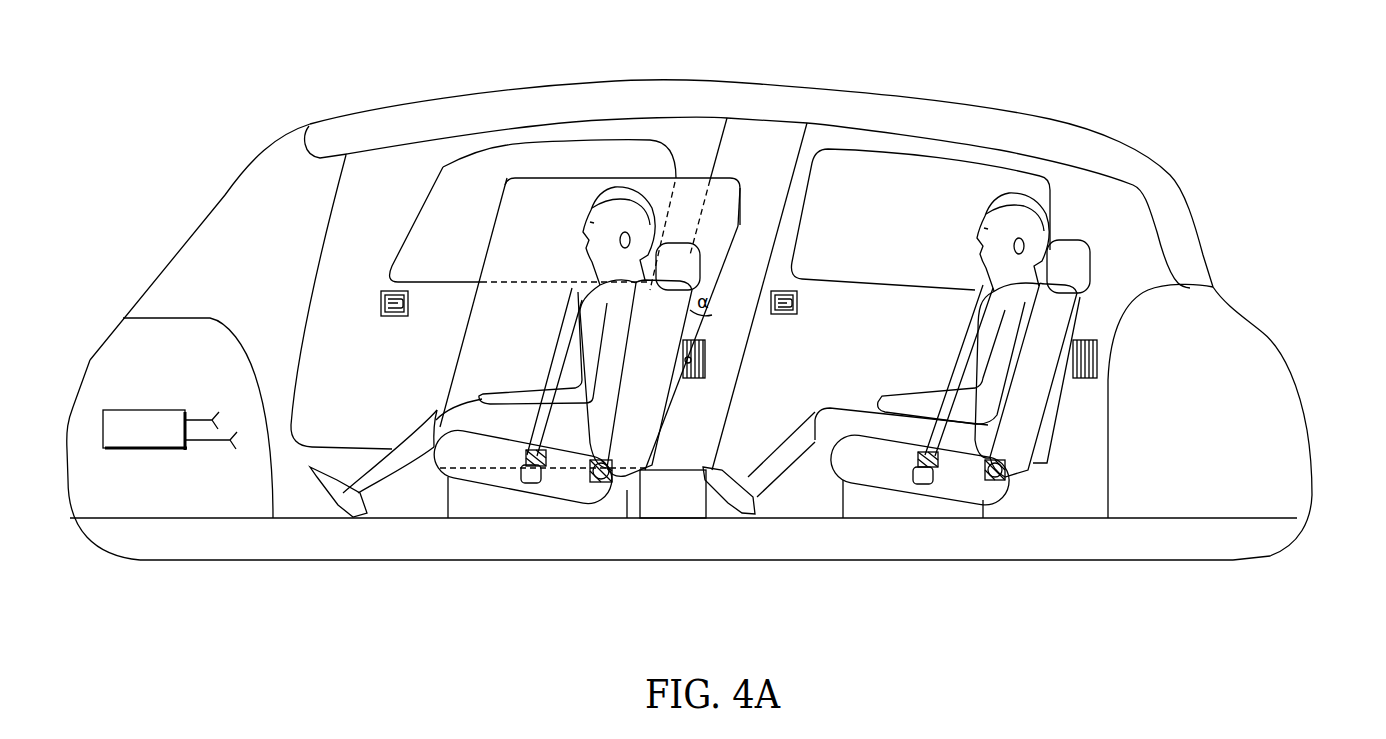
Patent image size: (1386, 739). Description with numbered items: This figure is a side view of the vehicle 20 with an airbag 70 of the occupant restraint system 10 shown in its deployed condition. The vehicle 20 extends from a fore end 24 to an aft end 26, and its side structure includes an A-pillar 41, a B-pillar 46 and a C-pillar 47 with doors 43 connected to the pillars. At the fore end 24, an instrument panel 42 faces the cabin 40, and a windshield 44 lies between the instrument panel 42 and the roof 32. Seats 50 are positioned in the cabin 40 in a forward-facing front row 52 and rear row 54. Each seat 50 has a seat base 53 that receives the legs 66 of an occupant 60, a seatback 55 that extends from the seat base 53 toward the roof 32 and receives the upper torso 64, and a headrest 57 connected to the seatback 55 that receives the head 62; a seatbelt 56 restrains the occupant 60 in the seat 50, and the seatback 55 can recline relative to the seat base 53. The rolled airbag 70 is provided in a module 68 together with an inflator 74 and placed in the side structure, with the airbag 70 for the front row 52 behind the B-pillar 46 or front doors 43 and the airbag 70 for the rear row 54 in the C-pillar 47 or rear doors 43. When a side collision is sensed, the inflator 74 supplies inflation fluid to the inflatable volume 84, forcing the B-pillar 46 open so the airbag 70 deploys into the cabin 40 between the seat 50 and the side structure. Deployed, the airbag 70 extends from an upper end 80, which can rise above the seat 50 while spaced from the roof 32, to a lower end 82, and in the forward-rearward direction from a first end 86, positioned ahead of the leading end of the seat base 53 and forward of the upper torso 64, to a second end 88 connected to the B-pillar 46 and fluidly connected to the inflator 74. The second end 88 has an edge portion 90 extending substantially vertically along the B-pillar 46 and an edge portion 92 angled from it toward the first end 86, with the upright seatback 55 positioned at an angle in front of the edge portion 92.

The occupant restraint system 10 is at (357, 570).
The vehicle 20 is at (1276, 443).
The fore end 24 is at (140, 260).
The aft end 26 is at (1248, 266).
The roof 32 is at (683, 85).
The cabin 40 is at (775, 150).
The A-pillar 41 is at (283, 250).
The instrument panel 42 is at (213, 320).
The doors 43 is at (377, 346).
The windshield 44 is at (197, 227).
The B-pillar 46 is at (717, 416).
The C-pillar 47 is at (1137, 280).
The seat 50 is at (517, 505).
The front row 52 is at (560, 530).
The seat base 53 is at (463, 440).
The rear row 54 is at (955, 530).
The seatback 55 is at (637, 413).
The seatbelt 56 is at (563, 373).
The headrest 57 is at (688, 252).
The occupant 60 is at (700, 334).
The head 62 is at (647, 205).
The upper torso 64 is at (597, 347).
The legs 66 is at (407, 443).
The module 68 is at (722, 385).
The airbag 70 is at (545, 170).
The inflator 74 is at (710, 360).
The upper end 80 is at (148, 418).
The lower end 82 is at (466, 482).
The inflatable volume 84 is at (509, 212).
The first end 86 is at (470, 337).
The second end 88 is at (720, 243).
The edge portion 90 is at (740, 190).
The edge portion 92 is at (713, 313).